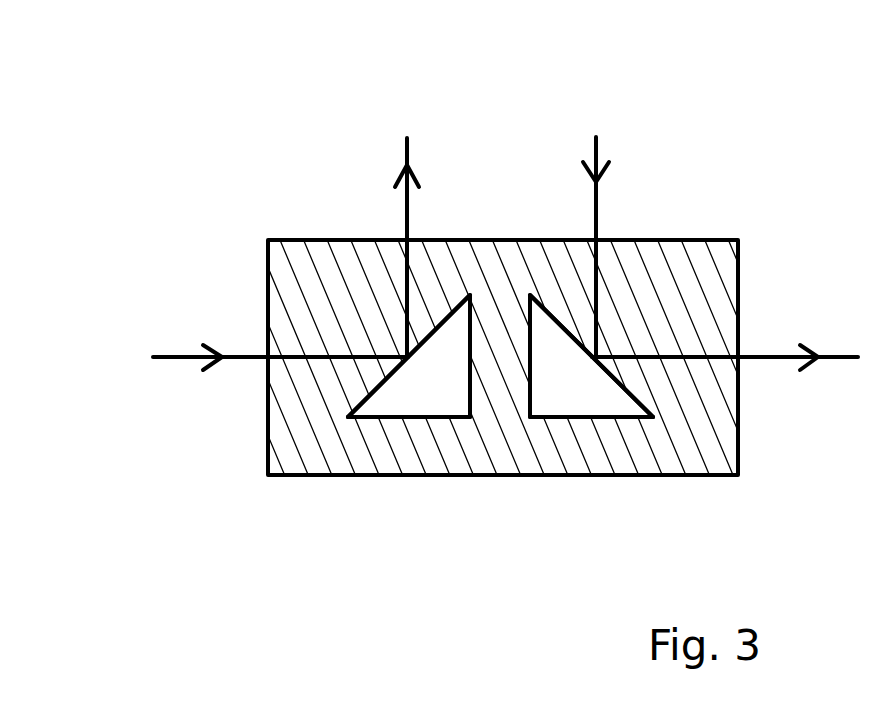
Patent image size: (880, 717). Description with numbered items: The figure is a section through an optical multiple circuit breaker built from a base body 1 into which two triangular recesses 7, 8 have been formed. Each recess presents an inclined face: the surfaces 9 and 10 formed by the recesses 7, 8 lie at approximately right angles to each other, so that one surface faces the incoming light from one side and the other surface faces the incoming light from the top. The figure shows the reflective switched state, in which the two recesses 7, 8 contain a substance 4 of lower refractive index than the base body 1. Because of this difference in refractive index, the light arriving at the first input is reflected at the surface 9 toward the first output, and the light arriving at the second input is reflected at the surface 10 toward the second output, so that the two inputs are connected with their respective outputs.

The base body 1 is at (300, 236).
The substance of lower refractive index 4 is at (568, 365).
The triangular recess 7 is at (368, 417).
The triangular recess 8 is at (622, 420).
The surface 9 is at (380, 384).
The surface 10 is at (620, 388).